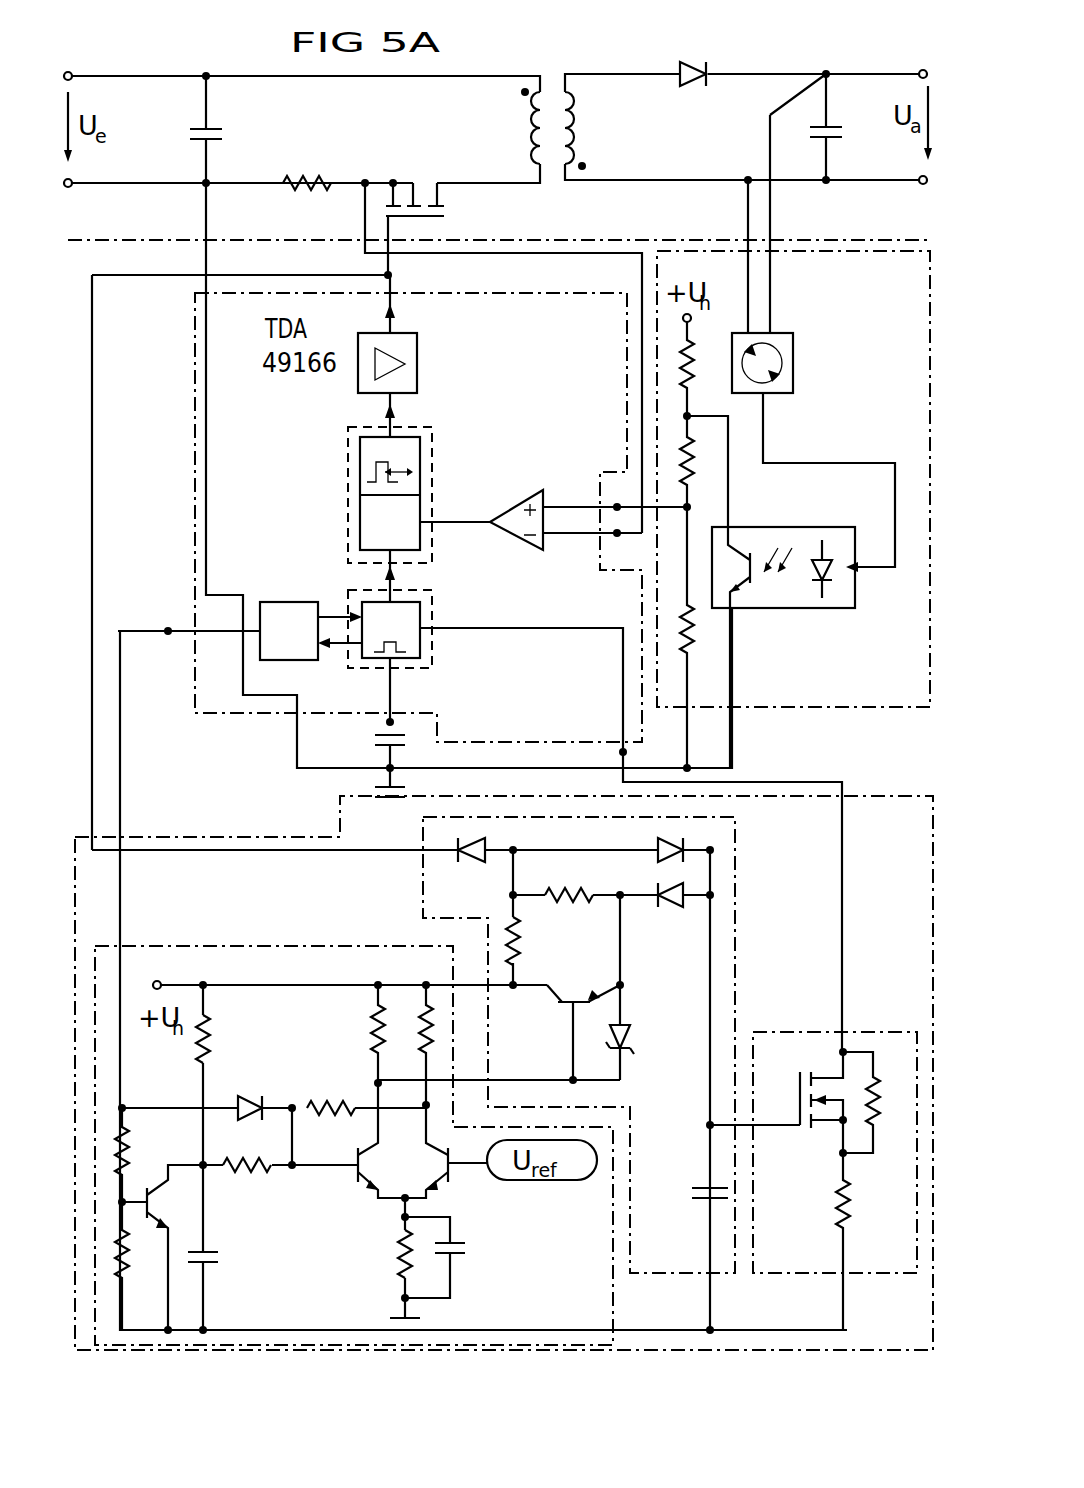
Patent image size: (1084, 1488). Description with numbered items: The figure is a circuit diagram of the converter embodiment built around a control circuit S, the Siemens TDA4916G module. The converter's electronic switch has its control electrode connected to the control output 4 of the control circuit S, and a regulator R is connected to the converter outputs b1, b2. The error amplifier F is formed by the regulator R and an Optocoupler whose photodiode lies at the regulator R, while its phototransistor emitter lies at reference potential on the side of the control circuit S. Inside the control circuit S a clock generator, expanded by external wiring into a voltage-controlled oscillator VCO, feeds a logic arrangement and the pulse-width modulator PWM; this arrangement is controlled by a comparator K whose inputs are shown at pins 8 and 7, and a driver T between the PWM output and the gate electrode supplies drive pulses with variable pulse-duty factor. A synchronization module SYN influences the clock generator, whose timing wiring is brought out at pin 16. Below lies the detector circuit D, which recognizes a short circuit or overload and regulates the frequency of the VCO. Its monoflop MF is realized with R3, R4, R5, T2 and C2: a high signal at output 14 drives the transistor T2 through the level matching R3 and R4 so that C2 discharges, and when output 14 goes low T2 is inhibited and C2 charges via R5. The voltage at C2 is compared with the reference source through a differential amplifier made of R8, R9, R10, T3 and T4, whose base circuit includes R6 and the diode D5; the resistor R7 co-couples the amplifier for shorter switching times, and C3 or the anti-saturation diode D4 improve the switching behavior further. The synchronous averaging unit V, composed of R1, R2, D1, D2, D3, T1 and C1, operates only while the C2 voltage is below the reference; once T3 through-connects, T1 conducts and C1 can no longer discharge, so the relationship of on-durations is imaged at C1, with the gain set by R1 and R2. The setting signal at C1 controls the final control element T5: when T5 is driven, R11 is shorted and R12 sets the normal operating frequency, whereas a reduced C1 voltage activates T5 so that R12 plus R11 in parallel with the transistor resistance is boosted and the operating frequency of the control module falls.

The control output 4 is at (378, 304).
The comparator inverting input pin 7 is at (592, 548).
The comparator non-inverting input pin 8 is at (615, 493).
The output 14 is at (189, 648).
The clock generator timing pin 16 is at (376, 690).
The output b1 is at (815, 203).
The output b2 is at (742, 235).
The control circuit S is at (195, 470).
The driver T is at (417, 345).
The pulse-width modulator PWM is at (432, 492).
The comparator K is at (520, 552).
The synchronization module SYN is at (293, 600).
The voltage-controlled oscillator VCO is at (432, 648).
The regulator R is at (793, 363).
The error amplifier F is at (820, 707).
The opto-coupler Optocoupler is at (796, 610).
The relationship forming unit V is at (735, 924).
The detector circuit D is at (216, 836).
The monoflop MF is at (263, 946).
The diode D1 is at (472, 860).
The diode D2 is at (664, 860).
The diode D3 is at (672, 908).
The anti-saturation diode D4 is at (636, 1036).
The diode D5 is at (250, 1096).
The resistor R1 is at (522, 957).
The resistor R2 is at (575, 903).
The resistor R3 is at (132, 1142).
The resistor R4 is at (132, 1276).
The resistor R5 is at (214, 1030).
The resistor R6 is at (262, 1174).
The resistor R7 is at (336, 1098).
The resistor R8 is at (370, 1030).
The resistor R9 is at (416, 1004).
The resistor R10 is at (396, 1252).
The resistor R11 is at (882, 1122).
The resistor R12 is at (852, 1218).
The capacitor C1 is at (700, 1184).
The capacitor C2 is at (220, 1258).
The capacitor C3 is at (467, 1248).
The transistor T1 is at (562, 1006).
The transistor T2 is at (162, 1247).
The transistor T3 is at (355, 1160).
The transistor T4 is at (440, 1186).
The final control element T5 is at (802, 1130).